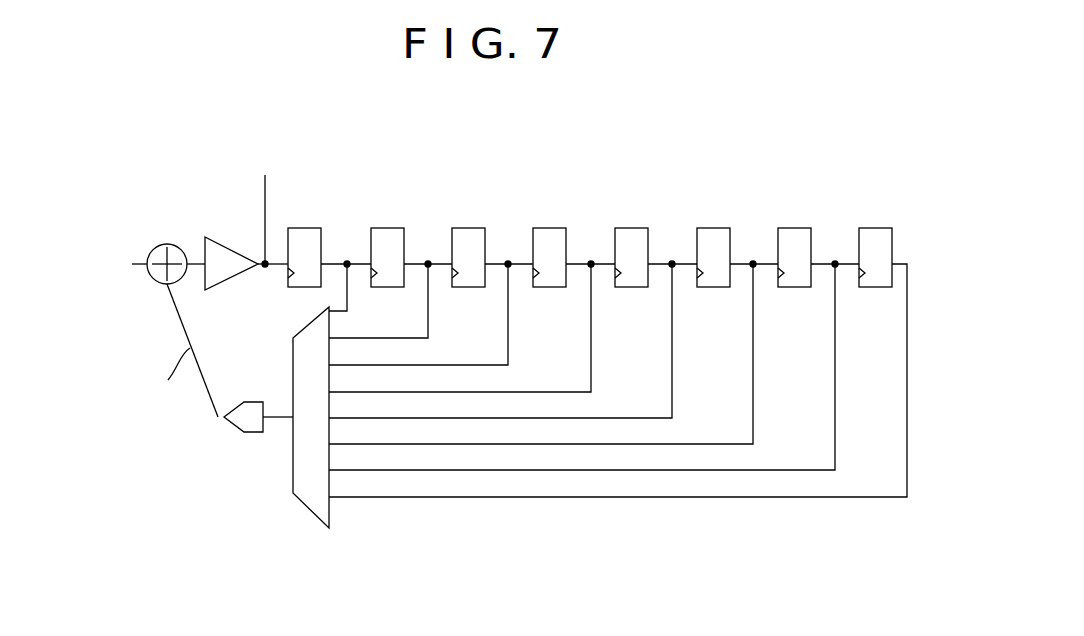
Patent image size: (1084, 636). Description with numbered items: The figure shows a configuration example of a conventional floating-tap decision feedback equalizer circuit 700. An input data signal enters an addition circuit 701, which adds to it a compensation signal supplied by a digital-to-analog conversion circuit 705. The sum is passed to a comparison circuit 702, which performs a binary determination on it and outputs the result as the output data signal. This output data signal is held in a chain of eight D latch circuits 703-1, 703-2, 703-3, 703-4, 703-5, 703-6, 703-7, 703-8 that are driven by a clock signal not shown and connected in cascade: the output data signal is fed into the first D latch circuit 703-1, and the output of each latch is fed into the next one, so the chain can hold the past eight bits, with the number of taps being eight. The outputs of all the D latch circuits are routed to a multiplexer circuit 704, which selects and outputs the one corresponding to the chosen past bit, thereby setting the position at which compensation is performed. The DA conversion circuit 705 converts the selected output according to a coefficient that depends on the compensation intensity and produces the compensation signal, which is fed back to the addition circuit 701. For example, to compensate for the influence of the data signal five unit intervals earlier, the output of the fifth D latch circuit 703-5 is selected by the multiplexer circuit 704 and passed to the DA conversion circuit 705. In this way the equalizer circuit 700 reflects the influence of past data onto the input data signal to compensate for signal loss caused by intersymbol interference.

The floating-tap decision feedback equalizer circuit 700 is at (505, 121).
The addition circuit 701 is at (180, 243).
The comparison circuit 702 is at (235, 246).
The D latch circuit 703-1 is at (306, 228).
The D latch circuit 703-2 is at (387, 228).
The D latch circuit 703-3 is at (467, 228).
The D latch circuit 703-4 is at (552, 228).
The D latch circuit 703-5 is at (636, 228).
The D latch circuit 703-6 is at (712, 228).
The D latch circuit 703-7 is at (796, 228).
The D latch circuit 703-8 is at (877, 228).
The multiplexer circuit 704 is at (312, 513).
The DA conversion circuit 705 is at (245, 432).